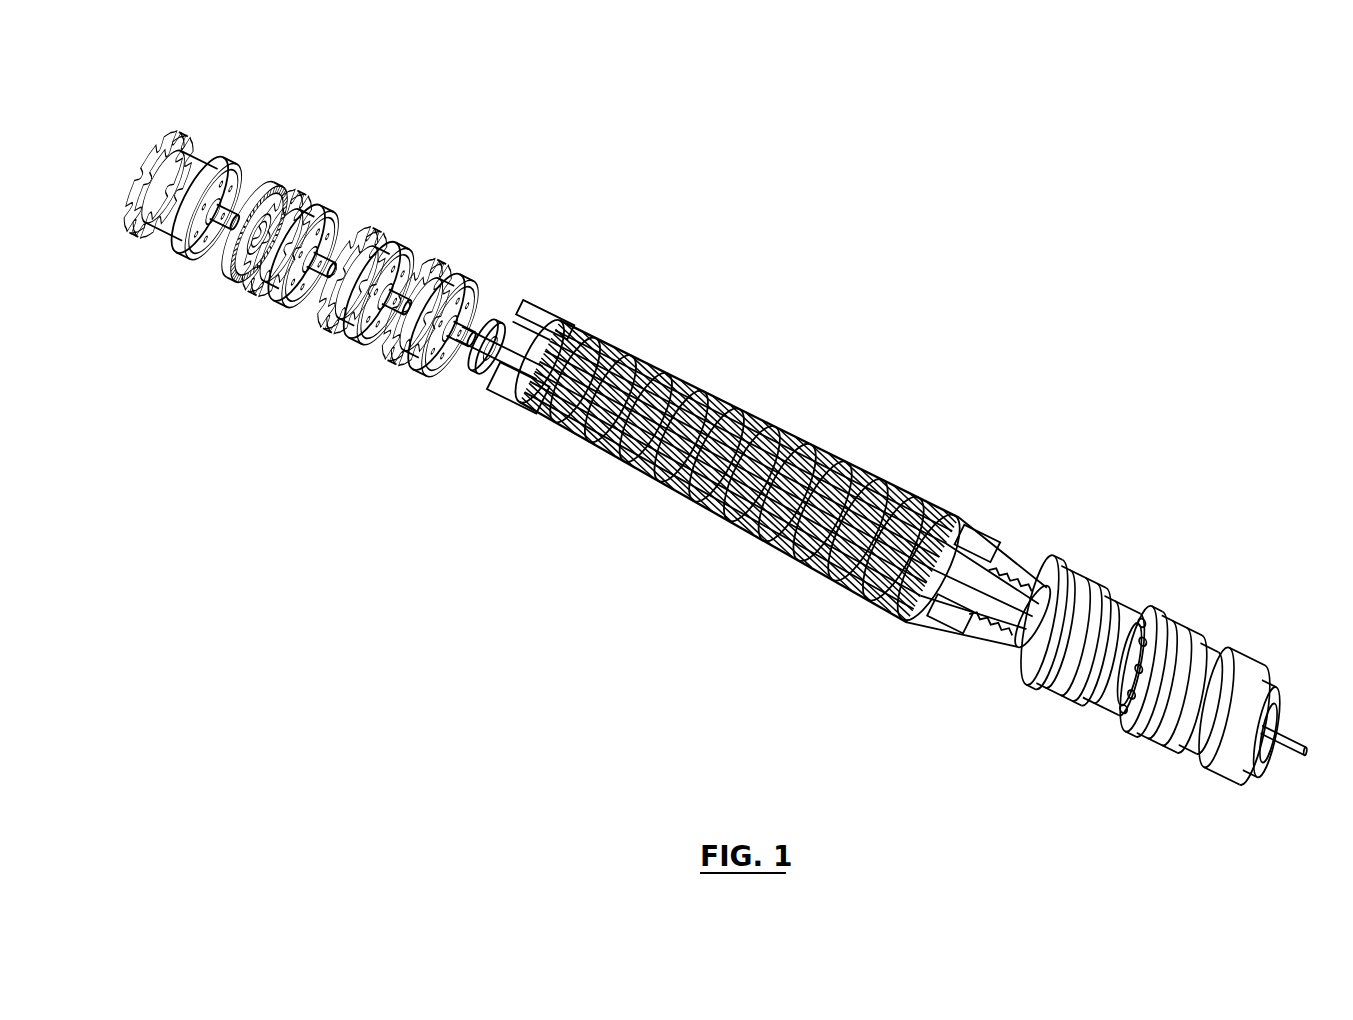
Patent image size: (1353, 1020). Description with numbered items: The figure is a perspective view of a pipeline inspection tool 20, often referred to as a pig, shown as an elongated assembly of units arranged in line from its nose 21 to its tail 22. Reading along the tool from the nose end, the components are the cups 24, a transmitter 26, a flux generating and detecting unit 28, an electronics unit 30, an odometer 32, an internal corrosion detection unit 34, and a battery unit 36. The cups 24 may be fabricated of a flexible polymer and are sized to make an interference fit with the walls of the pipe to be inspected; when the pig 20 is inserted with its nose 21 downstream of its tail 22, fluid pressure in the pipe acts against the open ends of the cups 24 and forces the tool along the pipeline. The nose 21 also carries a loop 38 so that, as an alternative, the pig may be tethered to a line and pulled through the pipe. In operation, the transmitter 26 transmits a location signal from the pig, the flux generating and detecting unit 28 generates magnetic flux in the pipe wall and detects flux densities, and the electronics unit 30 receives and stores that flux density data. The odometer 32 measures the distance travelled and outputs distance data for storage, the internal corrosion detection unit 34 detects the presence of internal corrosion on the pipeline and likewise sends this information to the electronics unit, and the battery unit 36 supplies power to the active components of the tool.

The pipeline inspection tool 20 is at (716, 470).
The nose 21 is at (1206, 703).
The tail 22 is at (189, 193).
The cups 24 is at (1153, 718).
The transmitter 26 is at (1045, 690).
The flux generating and detecting unit 28 is at (717, 520).
The electronics unit 30 is at (387, 333).
The odometer 32 is at (217, 240).
The internal corrosion detection unit 34 is at (222, 272).
The battery unit 36 is at (203, 165).
The loop 38 is at (1298, 750).